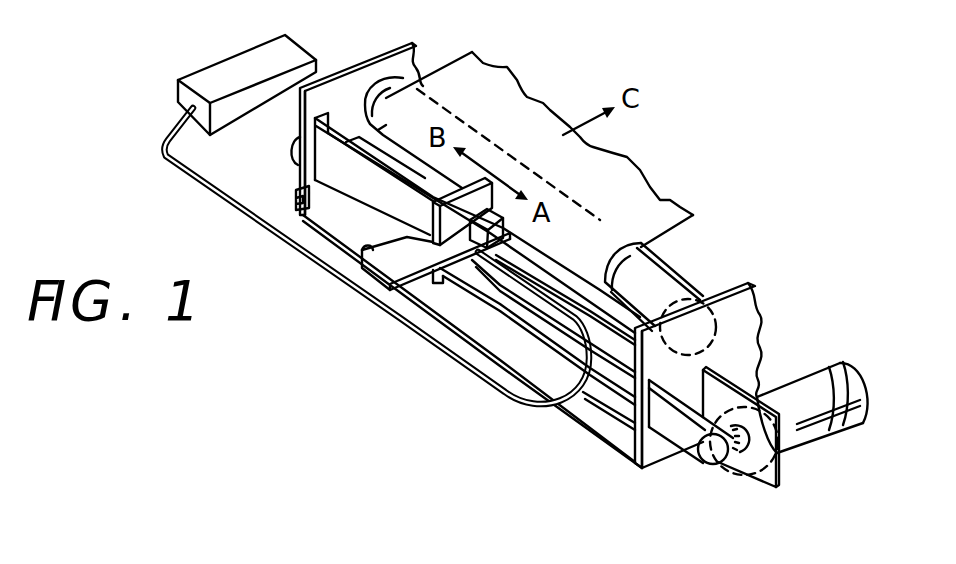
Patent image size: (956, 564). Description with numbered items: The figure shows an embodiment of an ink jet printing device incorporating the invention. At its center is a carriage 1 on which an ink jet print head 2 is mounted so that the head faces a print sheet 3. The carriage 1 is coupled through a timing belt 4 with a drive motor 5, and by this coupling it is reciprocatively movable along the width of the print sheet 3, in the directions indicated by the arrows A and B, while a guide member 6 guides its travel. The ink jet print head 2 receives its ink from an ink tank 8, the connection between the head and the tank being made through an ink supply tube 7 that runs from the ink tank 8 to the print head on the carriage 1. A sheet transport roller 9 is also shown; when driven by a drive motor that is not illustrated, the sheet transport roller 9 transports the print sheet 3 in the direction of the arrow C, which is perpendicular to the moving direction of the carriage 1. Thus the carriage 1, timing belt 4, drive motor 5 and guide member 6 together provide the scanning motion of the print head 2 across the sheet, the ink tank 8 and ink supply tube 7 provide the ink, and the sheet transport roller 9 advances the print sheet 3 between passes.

The carriage 1 is at (383, 267).
The ink jet print head 2 is at (475, 180).
The print sheet 3 is at (672, 198).
The timing belt 4 is at (692, 405).
The drive motor 5 is at (779, 382).
The guide member 6 is at (385, 168).
The ink supply tube 7 is at (423, 343).
The ink tank 8 is at (300, 47).
The sheet transport roller 9 is at (682, 276).